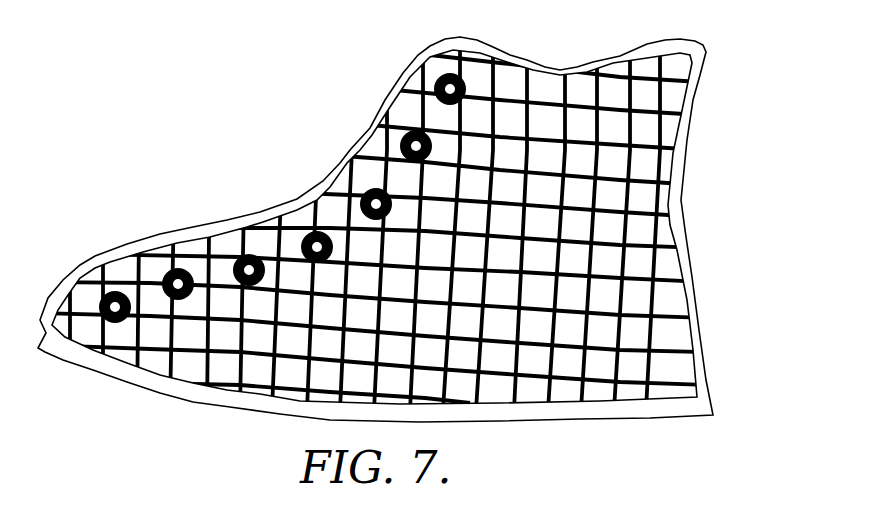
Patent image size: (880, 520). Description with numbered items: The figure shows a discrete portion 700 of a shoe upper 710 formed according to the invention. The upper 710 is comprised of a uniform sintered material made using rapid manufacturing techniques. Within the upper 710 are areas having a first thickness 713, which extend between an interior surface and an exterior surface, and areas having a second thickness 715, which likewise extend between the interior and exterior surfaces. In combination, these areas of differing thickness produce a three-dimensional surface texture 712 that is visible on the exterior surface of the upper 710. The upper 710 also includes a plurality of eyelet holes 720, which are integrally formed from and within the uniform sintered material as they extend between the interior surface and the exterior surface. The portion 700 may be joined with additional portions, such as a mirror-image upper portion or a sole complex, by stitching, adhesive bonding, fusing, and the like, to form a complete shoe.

The discrete portion of shoe upper 700 is at (229, 129).
The shoe upper 710 is at (663, 133).
The 3-D surface texture 712 is at (583, 84).
The areas having a first thickness 713 is at (672, 297).
The areas having a second thickness 715 is at (652, 332).
The eyelet holes 720 is at (387, 147).